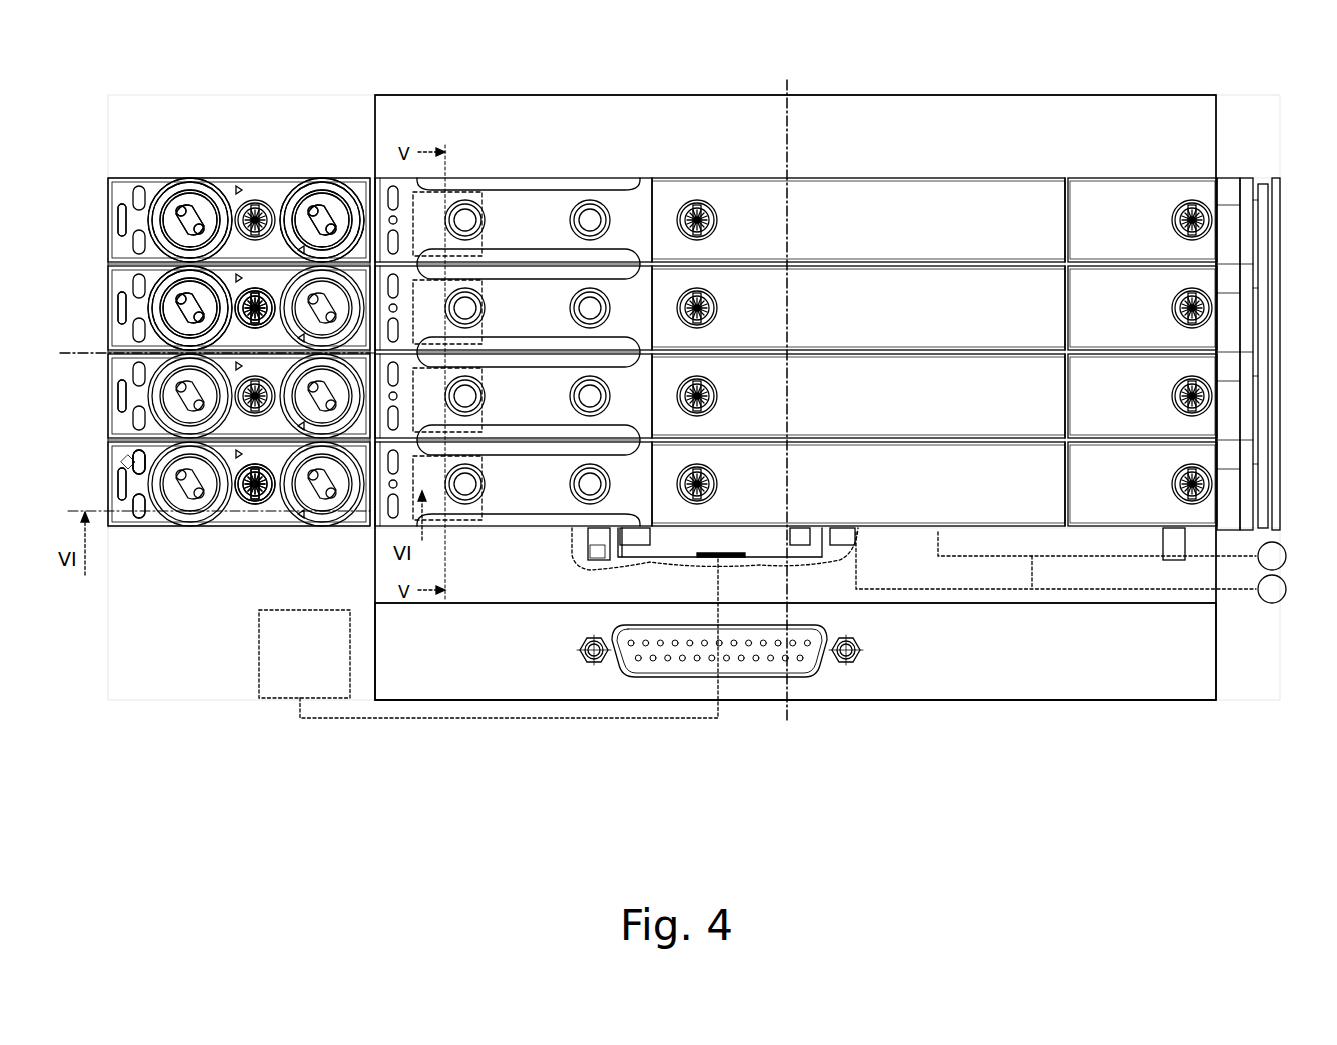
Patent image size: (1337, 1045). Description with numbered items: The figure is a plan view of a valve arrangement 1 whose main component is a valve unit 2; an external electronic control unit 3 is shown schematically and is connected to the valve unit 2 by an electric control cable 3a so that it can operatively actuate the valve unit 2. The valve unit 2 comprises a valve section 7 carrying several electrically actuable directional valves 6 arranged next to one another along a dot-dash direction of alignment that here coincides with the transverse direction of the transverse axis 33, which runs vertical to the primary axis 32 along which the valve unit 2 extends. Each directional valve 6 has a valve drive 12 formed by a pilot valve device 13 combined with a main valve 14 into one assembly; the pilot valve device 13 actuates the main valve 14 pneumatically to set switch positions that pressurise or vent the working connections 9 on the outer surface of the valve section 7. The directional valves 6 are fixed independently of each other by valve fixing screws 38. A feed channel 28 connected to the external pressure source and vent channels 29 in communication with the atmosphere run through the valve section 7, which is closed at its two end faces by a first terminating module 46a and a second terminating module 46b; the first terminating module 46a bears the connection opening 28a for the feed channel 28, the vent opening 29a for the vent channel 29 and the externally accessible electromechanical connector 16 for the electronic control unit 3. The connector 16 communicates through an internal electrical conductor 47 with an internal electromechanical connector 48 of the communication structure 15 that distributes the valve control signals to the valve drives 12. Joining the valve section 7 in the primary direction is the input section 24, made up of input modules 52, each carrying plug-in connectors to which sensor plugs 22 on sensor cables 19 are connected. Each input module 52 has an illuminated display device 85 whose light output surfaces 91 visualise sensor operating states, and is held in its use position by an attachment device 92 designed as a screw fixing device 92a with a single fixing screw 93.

The valve arrangement 1 is at (202, 670).
The valve unit 2 is at (325, 108).
The electronic control unit 3 is at (304, 654).
The electric control cable 3a is at (458, 720).
The directional valve 6 is at (836, 463).
The valve section 7 is at (1012, 160).
The working connection 9 is at (1296, 491).
The valve drive 12 is at (513, 358).
The pilot valve device 13 is at (556, 300).
The main valve 14 is at (770, 305).
The communication structure 15 is at (663, 540).
The electromechanical connector 16 is at (750, 678).
The sensor cable 19 is at (130, 178).
The sensor plug 22 is at (178, 300).
The input section 24 is at (232, 176).
The feed channel 28 is at (936, 555).
The connection opening 28a is at (1216, 556).
The vent channel 29 is at (1030, 576).
The vent opening 29a is at (1216, 589).
The primary axis 32 is at (200, 377).
The transverse axis 33 is at (844, 391).
The valve fixing screw 38 is at (695, 212).
The first terminating module 46a is at (972, 672).
The second terminating module 46b is at (1110, 125).
The internal electrical conductor 47 is at (716, 590).
The internal electromechanical connector 48 is at (762, 540).
The input module 52 is at (115, 474).
The illuminated display device 85 is at (125, 462).
The light output surface 91 is at (140, 508).
The attachment device 92 is at (281, 332).
The screw fixing device 92a is at (250, 505).
The fixing screw 93 is at (255, 325).